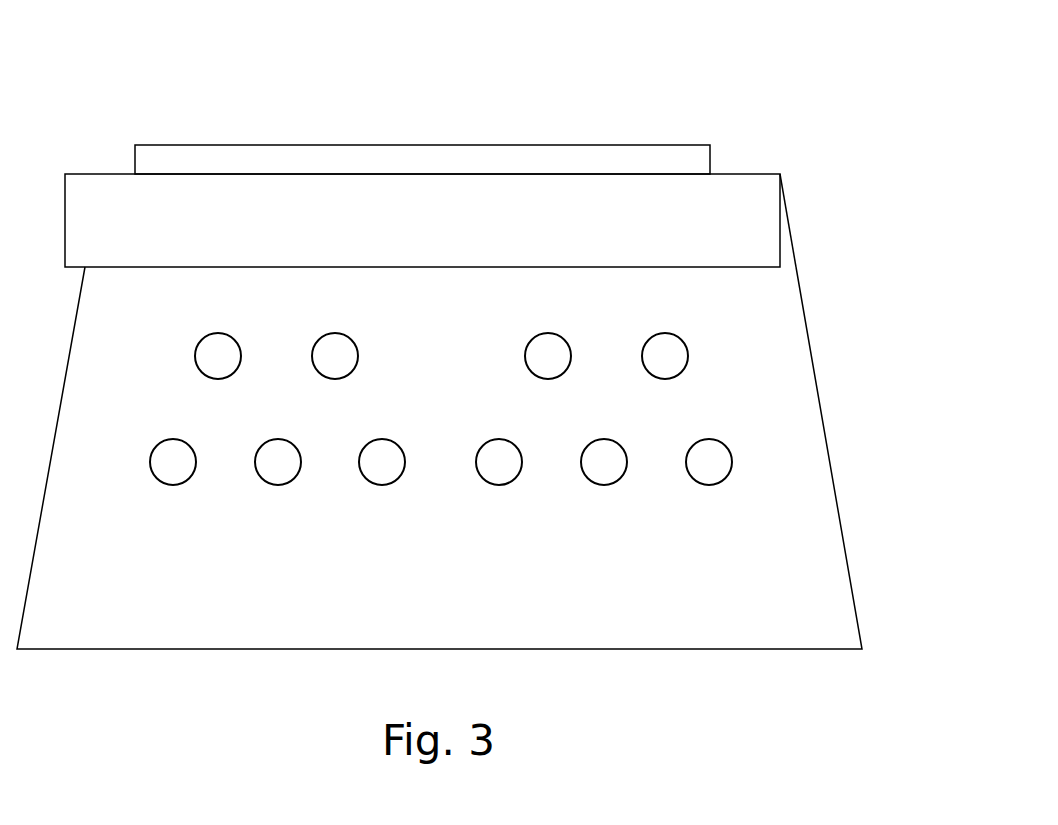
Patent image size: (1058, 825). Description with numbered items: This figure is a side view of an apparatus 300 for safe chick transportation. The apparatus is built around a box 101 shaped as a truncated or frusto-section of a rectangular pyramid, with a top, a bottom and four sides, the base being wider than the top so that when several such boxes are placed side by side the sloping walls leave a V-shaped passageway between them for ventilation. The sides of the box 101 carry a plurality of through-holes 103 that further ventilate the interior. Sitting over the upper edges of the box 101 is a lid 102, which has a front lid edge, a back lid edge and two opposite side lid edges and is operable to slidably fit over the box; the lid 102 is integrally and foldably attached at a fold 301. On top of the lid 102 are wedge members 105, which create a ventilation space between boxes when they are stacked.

The apparatus for safe chick transportation 300 is at (249, 87).
The wedge members 105 is at (610, 157).
The lid 102 is at (767, 227).
The fold 301 is at (780, 174).
The box 101 is at (797, 357).
The through-holes 103 is at (505, 485).